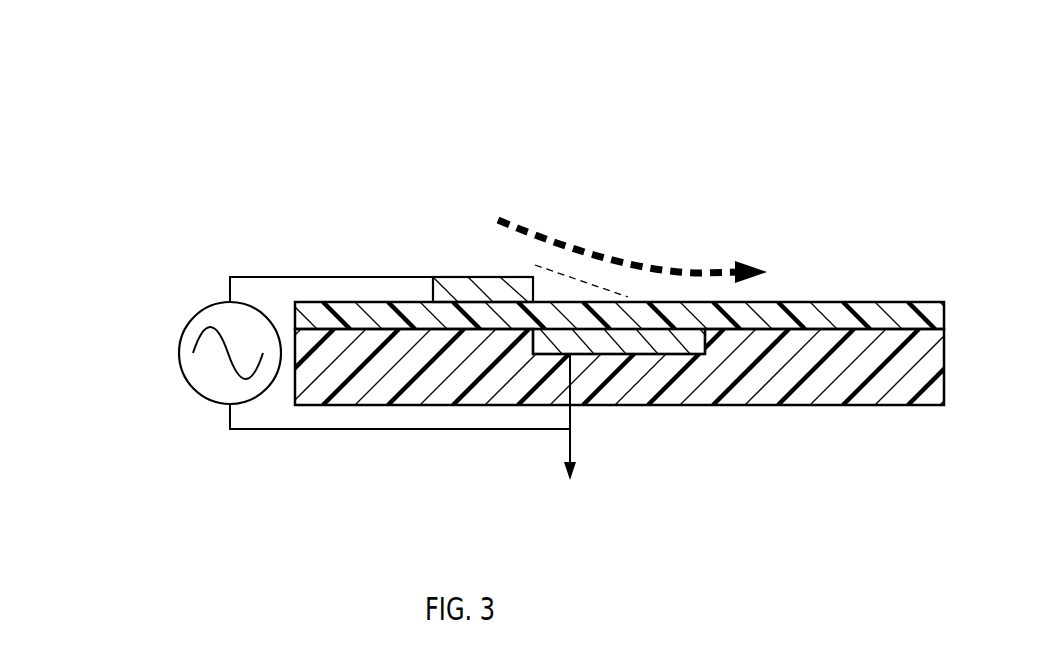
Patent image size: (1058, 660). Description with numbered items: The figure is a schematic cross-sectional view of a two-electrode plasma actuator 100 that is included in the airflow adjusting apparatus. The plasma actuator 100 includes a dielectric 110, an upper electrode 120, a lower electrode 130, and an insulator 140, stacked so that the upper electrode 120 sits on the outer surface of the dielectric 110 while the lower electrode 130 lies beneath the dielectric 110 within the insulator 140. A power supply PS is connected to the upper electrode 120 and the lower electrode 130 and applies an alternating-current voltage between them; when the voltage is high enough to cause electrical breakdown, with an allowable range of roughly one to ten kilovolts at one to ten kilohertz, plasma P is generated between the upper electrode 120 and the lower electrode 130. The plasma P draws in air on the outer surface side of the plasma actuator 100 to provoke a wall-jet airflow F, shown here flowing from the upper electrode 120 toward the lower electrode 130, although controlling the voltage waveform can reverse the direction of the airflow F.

The two-electrode plasma actuator 100 is at (363, 160).
The dielectric 110 is at (830, 300).
The upper electrode 120 is at (477, 277).
The lower electrode 130 is at (645, 349).
The insulator 140 is at (773, 403).
The power supply PS is at (193, 318).
The plasma P is at (575, 262).
The airflow F is at (684, 270).